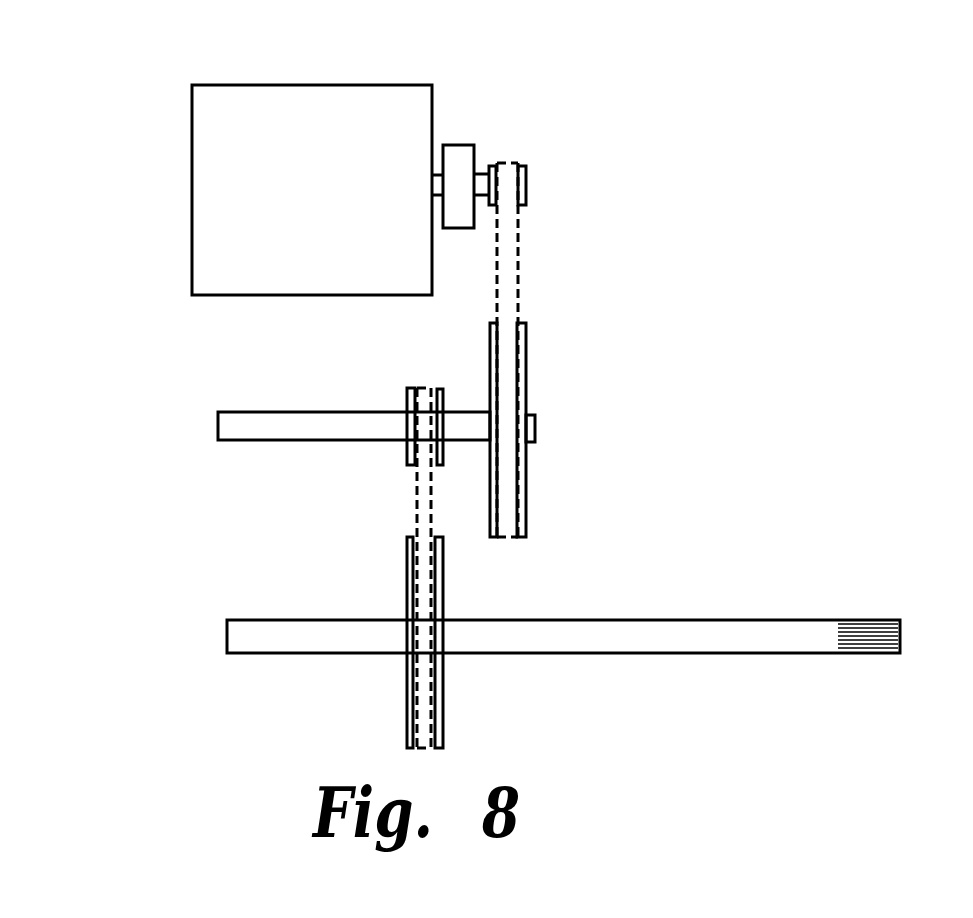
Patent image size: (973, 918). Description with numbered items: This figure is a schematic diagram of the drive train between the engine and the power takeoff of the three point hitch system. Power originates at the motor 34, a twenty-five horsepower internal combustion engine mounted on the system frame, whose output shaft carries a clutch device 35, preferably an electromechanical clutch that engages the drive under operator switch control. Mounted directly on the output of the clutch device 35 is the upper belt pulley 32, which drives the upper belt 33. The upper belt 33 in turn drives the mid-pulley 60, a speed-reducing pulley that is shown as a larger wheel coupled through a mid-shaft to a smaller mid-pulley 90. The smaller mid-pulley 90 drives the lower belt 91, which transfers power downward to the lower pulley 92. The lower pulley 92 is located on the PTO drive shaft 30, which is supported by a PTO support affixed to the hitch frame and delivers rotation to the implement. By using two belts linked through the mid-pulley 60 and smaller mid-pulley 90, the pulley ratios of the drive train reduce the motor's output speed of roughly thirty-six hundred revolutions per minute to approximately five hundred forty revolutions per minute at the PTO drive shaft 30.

The PTO drive shaft 30 is at (820, 636).
The upper belt pulley 32 is at (528, 173).
The upper belt 33 is at (505, 263).
The motor 34 is at (376, 112).
The clutch device 35 is at (462, 157).
The mid-pulley 60 is at (526, 375).
The smaller mid-pulley 90 is at (412, 391).
The lower belt 91 is at (417, 510).
The lower pulley 92 is at (405, 588).